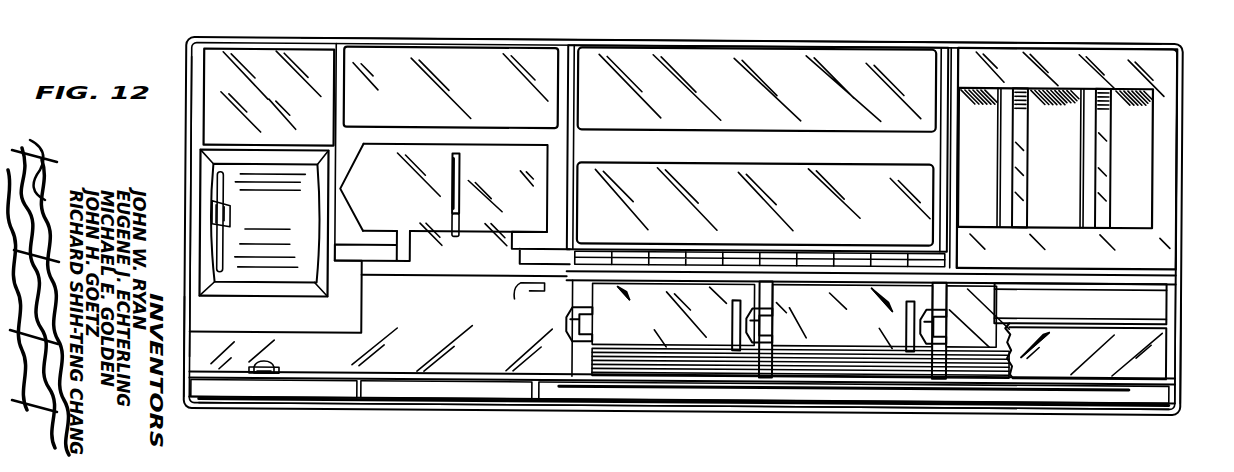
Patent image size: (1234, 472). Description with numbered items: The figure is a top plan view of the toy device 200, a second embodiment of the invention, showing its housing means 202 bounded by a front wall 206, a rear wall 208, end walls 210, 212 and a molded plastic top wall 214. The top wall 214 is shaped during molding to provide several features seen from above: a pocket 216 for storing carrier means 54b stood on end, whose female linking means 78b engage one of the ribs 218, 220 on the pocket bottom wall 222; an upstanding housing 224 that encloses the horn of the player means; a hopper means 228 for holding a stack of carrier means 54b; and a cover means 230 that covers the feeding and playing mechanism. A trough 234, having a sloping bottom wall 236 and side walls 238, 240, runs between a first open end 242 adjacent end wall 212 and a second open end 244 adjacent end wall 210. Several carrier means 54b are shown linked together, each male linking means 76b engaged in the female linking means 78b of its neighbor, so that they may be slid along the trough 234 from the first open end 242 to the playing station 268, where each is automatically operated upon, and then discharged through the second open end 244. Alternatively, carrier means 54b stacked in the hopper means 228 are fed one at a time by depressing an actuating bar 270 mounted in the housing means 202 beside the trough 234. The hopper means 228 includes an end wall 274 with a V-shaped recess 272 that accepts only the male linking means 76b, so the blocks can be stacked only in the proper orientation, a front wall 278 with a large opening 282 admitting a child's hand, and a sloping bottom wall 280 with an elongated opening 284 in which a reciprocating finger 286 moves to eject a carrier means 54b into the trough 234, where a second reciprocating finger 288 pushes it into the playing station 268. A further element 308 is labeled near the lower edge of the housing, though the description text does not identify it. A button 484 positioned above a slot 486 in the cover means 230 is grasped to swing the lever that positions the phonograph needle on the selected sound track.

The toy device 200 is at (1204, 212).
The housing means 202 is at (1148, 36).
The front wall 206 is at (824, 408).
The rear wall 208 is at (657, 44).
The end wall 210 is at (190, 130).
The end wall 212 is at (1178, 180).
The top wall 214 is at (754, 69).
The pocket 216 is at (1152, 134).
The rib 218 is at (1018, 174).
The rib 220 is at (1095, 158).
The bottom wall 222 is at (1135, 182).
The upstanding housing 224 is at (850, 263).
The hopper means 228 is at (465, 133).
The cover means 230 is at (287, 61).
The trough 234 is at (1170, 322).
The sloping bottom wall 236 is at (1074, 359).
The side wall 238 is at (791, 329).
The side wall 240 is at (934, 276).
The first open end 242 is at (1180, 359).
The second open end 244 is at (181, 375).
The playing station 268 is at (285, 364).
The actuating bar 270 is at (374, 395).
The V-shaped recess 272 is at (354, 158).
The end wall 274 is at (349, 218).
The front wall 278 is at (374, 240).
The sloping bottom wall 280 is at (506, 198).
The large opening 282 is at (418, 269).
The elongated opening 284 is at (452, 236).
The reciprocating finger 286 is at (458, 178).
The reciprocating finger 288 is at (452, 327).
The bottom rail element 308 is at (290, 365).
The button 484 is at (230, 217).
The slot 486 is at (225, 200).
The carrier means 54b is at (736, 345).
The male linking means 76b is at (578, 331).
The female linking means 78b is at (750, 331).